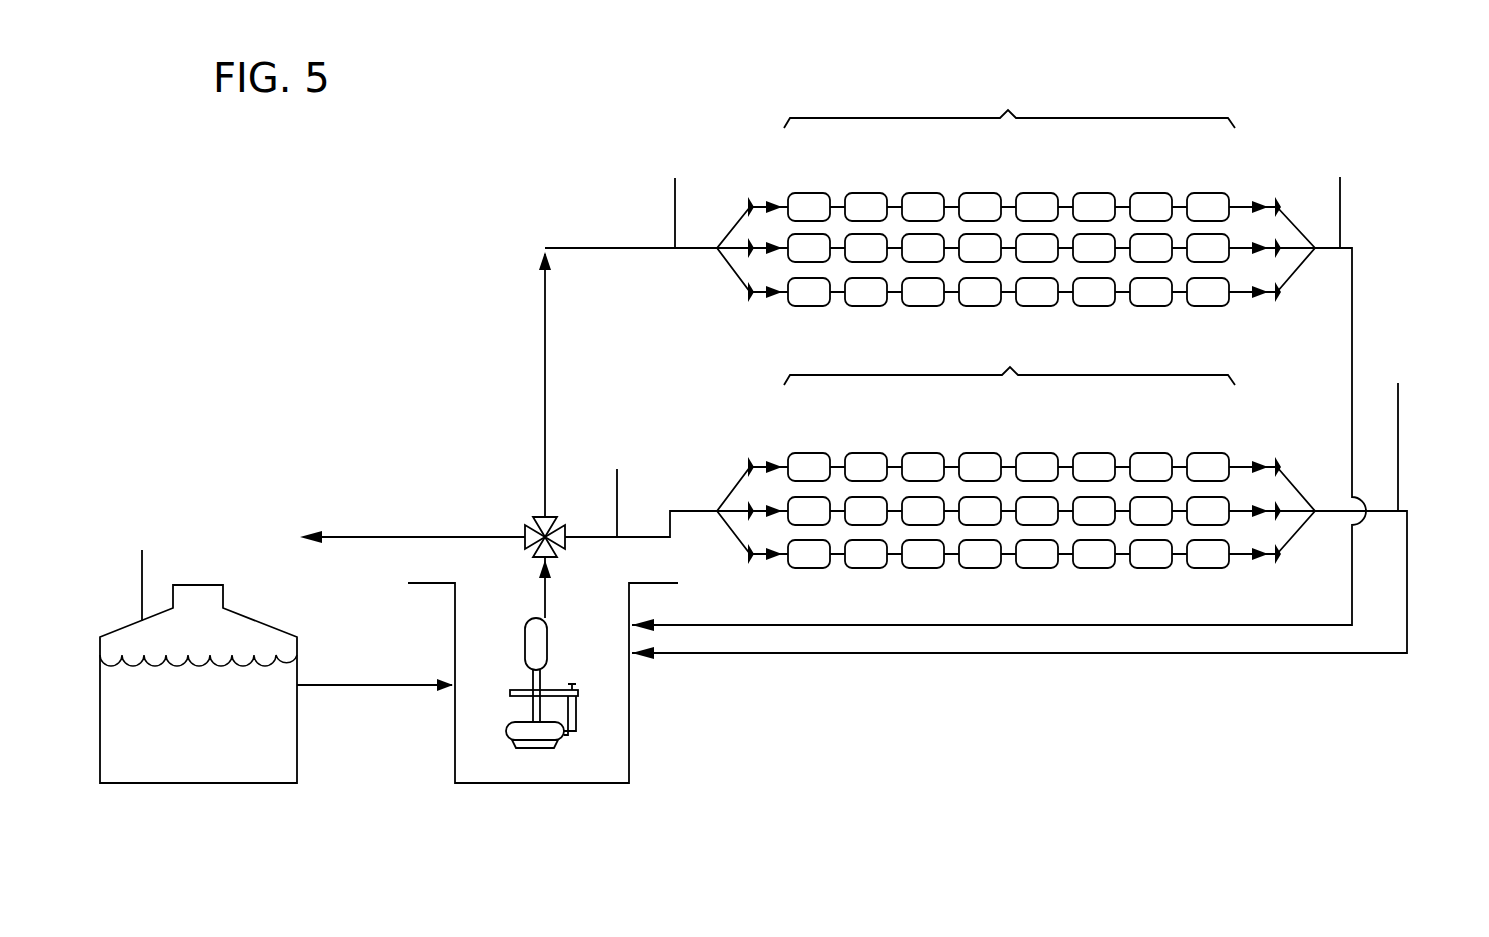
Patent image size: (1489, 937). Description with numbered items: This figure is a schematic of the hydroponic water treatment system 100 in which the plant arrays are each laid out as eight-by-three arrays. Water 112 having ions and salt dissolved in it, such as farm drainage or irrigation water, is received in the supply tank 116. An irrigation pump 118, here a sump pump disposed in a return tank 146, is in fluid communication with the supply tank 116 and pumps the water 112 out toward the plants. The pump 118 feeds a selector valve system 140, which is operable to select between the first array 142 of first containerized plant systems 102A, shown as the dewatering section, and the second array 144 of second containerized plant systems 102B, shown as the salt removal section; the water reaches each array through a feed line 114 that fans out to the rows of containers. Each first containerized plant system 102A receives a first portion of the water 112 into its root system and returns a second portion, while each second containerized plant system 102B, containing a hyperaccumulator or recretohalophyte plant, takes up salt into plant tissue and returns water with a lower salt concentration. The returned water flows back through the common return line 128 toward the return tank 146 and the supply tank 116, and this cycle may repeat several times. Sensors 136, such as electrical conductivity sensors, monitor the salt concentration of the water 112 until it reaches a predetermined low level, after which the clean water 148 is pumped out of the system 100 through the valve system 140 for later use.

The hydroponic water treatment system 100 is at (722, 58).
The first containerized plant systems 102A is at (958, 193).
The second containerized plant systems 102B is at (960, 453).
The water 112 is at (220, 724).
The feed inlet line 114 is at (695, 247).
The supply tank 116 is at (243, 617).
The irrigation pump 118 is at (577, 707).
The common return line 128 is at (1352, 288).
The sensor 136 is at (770, 364).
The selector valve system 140 is at (540, 515).
The first array 142 is at (1009, 124).
The second array 144 is at (1009, 390).
The return tank 146 is at (535, 785).
The clean water 148 is at (377, 518).